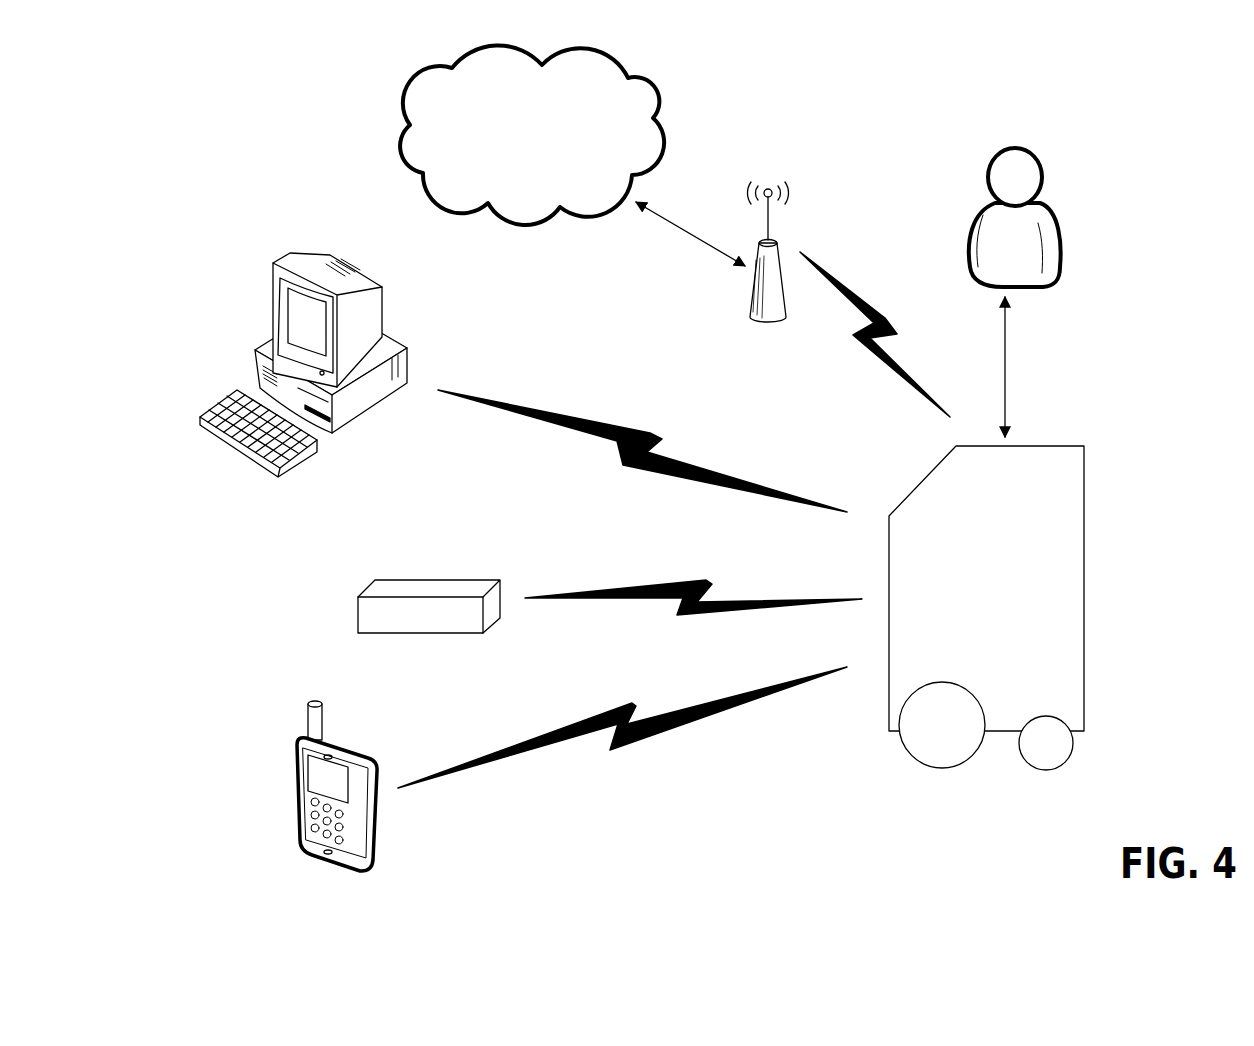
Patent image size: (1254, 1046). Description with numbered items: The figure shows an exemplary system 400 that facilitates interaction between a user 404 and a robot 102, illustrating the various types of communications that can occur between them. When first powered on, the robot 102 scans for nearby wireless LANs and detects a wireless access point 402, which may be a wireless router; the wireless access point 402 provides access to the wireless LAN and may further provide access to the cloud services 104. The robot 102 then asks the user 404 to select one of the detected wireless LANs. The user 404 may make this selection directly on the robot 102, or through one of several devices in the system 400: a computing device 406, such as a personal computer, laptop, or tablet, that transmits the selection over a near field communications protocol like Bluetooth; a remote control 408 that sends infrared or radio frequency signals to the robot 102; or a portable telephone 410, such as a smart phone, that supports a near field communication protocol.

The robot 102 is at (1085, 520).
The cloud services 104 is at (657, 97).
The system 400 is at (1158, 141).
The wireless access point 402 is at (747, 312).
The user 404 is at (1060, 237).
The computing device 406 is at (383, 312).
The remote control 408 is at (430, 580).
The portable telephone 410 is at (350, 740).